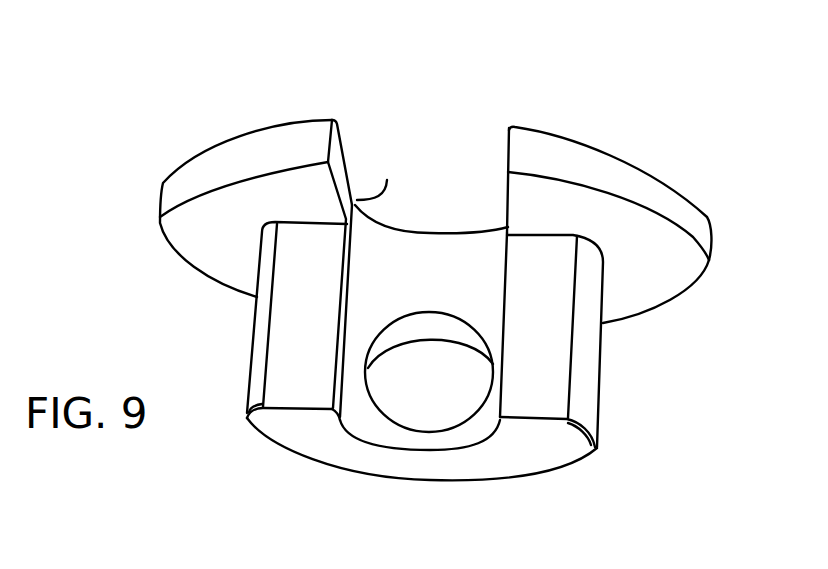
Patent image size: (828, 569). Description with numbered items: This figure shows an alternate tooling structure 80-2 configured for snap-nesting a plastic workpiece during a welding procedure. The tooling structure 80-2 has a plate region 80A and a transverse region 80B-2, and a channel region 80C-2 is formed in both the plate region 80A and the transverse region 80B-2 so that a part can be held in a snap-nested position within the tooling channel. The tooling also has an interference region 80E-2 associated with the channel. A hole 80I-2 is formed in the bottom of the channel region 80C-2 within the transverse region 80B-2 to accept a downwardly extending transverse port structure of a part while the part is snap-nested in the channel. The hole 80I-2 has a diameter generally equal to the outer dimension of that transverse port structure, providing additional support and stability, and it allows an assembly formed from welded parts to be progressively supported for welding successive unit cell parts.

The tooling structure 80-2 is at (652, 100).
The plate region 80A is at (205, 166).
The transverse region 80B-2 is at (257, 327).
The channel region 80C-2 is at (434, 172).
The interference region 80E-2 is at (387, 180).
The hole 80I-2 is at (430, 390).